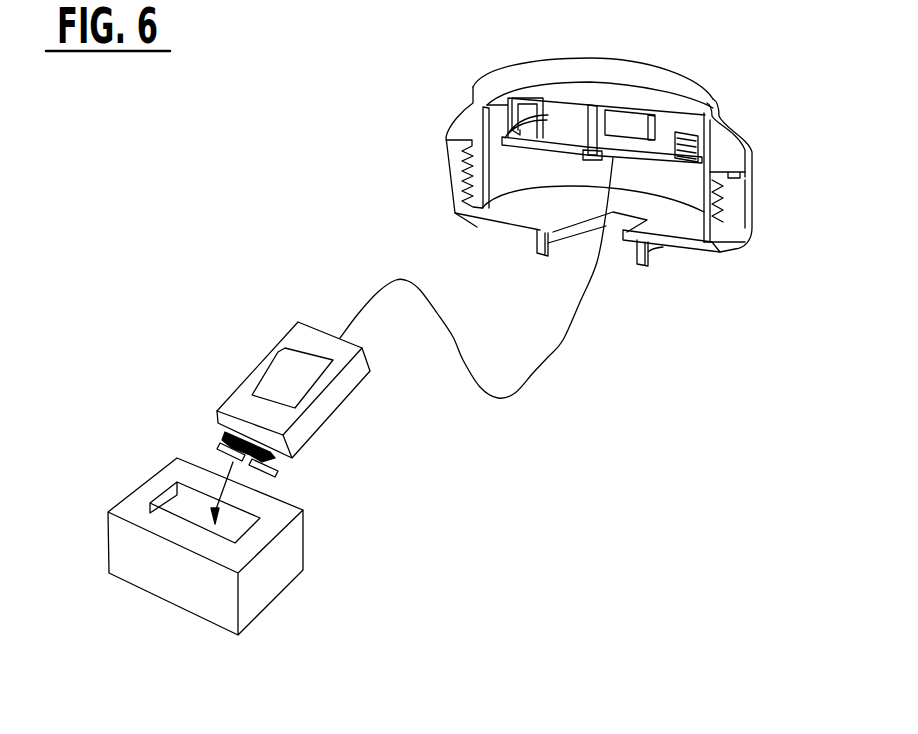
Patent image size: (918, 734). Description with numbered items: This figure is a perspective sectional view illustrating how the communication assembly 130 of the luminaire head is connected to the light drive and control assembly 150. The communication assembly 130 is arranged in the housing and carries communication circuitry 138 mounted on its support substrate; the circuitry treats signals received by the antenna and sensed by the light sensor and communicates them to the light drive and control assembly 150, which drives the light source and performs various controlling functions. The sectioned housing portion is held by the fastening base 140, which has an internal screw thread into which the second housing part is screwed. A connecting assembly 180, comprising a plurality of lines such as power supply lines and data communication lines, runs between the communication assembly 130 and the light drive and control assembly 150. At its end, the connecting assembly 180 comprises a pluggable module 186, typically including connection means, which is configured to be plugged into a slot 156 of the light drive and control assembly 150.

The communication assembly 130 is at (599, 164).
The communication circuitry 138 is at (621, 128).
The fastening base 140 is at (663, 257).
The light drive and control assembly 150 is at (173, 523).
The slot 156 is at (168, 498).
The connecting assembly 180 is at (535, 378).
The pluggable module 186 is at (325, 410).